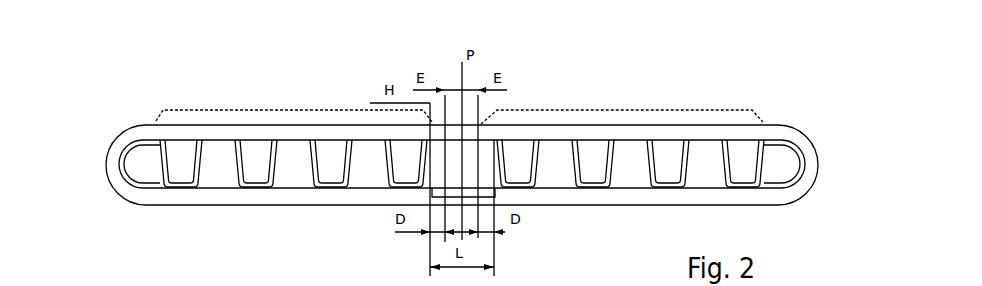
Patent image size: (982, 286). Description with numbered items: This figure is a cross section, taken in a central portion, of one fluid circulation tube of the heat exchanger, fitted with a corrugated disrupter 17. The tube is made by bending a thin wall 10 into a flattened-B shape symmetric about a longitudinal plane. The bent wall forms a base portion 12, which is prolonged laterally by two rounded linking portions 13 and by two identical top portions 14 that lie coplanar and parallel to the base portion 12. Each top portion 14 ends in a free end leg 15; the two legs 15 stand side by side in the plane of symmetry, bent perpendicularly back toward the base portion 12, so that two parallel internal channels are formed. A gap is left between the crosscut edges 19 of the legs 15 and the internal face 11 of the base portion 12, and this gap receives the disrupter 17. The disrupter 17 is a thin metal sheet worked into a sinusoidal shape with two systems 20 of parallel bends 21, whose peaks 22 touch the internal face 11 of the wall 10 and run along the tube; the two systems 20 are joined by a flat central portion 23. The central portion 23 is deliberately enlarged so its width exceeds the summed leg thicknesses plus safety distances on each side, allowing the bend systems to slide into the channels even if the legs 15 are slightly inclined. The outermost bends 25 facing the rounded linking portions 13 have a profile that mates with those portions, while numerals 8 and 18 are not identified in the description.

The stator 8 is at (263, 100).
The wall 10 is at (252, 212).
The internal face 11 is at (332, 184).
The base portion 12 is at (587, 196).
The rounded linking portions 13 is at (108, 150).
The top portions 14 is at (223, 139).
The free end legs 15 is at (452, 160).
The disrupter 17 is at (776, 128).
The slot 18 is at (201, 184).
The crosscut edges 19 is at (463, 233).
The systems of parallel bends 20 is at (298, 110).
The bends 21 is at (287, 187).
The peaks 22 is at (178, 139).
The flat central portion 23 is at (422, 198).
The bends facing the rounded linking portions 25 is at (131, 169).